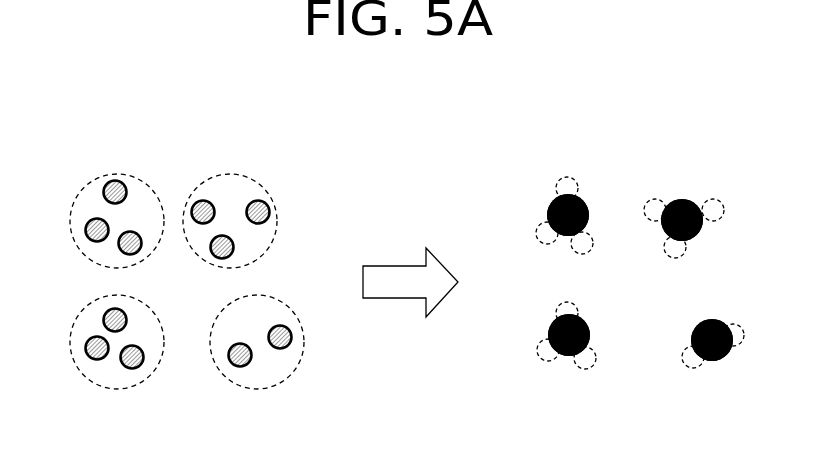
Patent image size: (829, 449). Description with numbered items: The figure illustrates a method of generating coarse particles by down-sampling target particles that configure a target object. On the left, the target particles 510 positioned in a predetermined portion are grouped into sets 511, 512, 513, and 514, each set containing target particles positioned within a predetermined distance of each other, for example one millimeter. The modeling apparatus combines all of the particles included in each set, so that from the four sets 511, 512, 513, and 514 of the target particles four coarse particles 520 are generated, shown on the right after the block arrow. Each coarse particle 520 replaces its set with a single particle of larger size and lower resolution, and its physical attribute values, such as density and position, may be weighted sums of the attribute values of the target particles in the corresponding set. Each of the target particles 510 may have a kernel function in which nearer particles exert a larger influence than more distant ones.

The target particles 510 is at (233, 162).
The first set of target particles 511 is at (95, 182).
The second set of target particles 512 is at (260, 182).
The third set of target particles 513 is at (95, 301).
The fourth set of target particles 514 is at (273, 297).
The coarse particles 520 is at (669, 168).